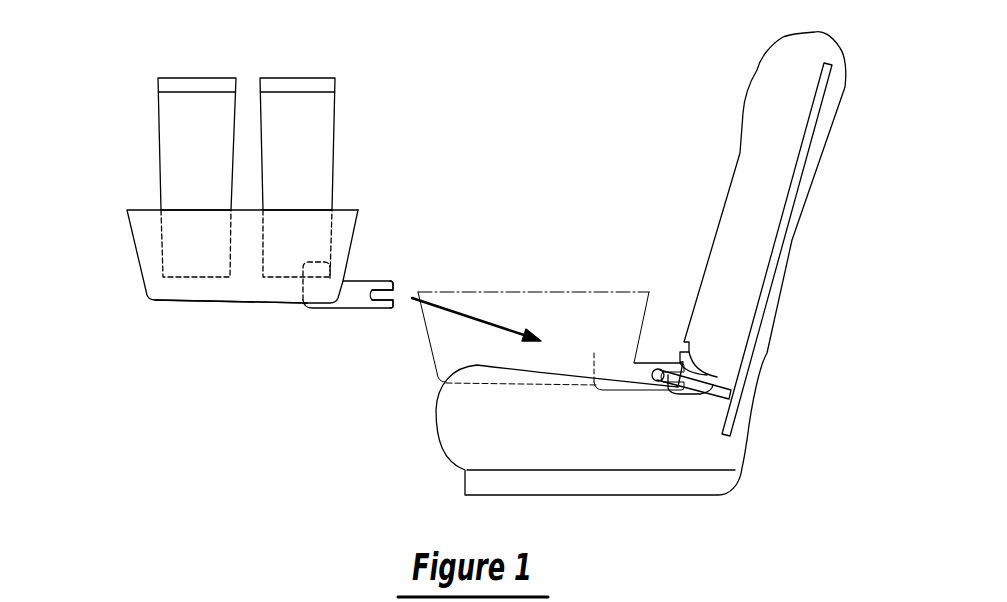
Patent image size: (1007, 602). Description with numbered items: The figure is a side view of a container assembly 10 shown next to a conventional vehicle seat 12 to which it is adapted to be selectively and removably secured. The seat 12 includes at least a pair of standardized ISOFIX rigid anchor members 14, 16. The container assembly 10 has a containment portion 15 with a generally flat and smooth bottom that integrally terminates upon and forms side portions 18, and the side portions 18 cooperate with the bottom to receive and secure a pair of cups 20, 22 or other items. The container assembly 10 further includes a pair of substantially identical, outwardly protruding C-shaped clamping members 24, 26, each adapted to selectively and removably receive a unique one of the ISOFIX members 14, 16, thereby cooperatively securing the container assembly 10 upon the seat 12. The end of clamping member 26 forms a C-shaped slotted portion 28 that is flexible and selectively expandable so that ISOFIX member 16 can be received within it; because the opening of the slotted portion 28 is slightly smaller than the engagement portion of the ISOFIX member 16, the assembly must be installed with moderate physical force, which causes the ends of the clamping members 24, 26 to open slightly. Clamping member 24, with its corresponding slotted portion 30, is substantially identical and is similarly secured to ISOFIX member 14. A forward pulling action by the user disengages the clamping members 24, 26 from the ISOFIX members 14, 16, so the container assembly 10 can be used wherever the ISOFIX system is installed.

The container assembly 10 is at (97, 106).
The vehicle seat 12 is at (837, 50).
The ISOFIX rigid anchor member 14 is at (680, 360).
The containment portion 15 is at (225, 303).
The ISOFIX rigid anchor member 16 is at (690, 383).
The side portions 18 is at (345, 242).
The cup 20 is at (195, 95).
The cup 22 is at (318, 117).
The clamping member 24 is at (352, 302).
The clamping member 26 is at (316, 281).
The slotted portion 28 is at (377, 305).
The slotted portion 30 is at (382, 304).